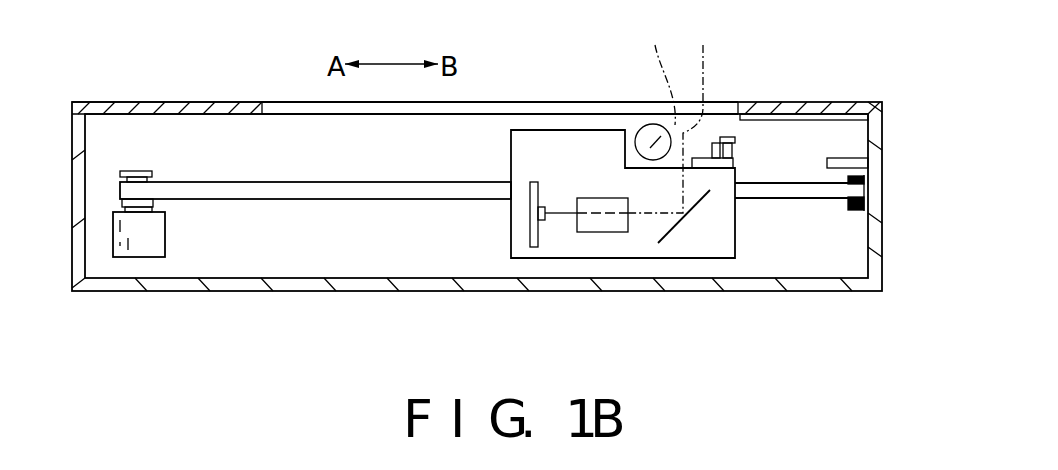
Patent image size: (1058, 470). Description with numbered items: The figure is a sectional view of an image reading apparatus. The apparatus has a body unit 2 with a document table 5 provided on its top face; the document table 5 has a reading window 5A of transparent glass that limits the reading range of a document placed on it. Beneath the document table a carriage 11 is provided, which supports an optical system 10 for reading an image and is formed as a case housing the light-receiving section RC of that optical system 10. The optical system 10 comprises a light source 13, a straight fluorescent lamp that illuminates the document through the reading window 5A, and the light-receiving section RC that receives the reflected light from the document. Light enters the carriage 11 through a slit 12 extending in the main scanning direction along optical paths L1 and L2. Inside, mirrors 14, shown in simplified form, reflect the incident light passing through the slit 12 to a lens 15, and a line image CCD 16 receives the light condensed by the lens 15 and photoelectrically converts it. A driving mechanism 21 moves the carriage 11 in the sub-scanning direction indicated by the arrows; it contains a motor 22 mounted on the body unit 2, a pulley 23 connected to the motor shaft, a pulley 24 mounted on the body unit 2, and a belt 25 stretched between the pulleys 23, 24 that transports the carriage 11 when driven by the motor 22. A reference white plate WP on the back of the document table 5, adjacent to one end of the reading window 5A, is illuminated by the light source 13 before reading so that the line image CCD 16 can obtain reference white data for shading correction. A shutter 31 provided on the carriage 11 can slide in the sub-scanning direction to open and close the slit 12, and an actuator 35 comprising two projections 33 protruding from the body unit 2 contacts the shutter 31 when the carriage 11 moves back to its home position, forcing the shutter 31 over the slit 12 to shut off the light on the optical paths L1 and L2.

The body unit 2 is at (883, 231).
The document table 5 is at (223, 103).
The reading window 5A is at (558, 103).
The optical system 10 is at (497, 212).
The carriage 11 is at (510, 157).
The slit 12 is at (680, 169).
The light source 13 is at (643, 127).
The mirrors 14 is at (688, 214).
The lens 15 is at (603, 198).
The line image CCD 16 is at (540, 208).
The driving mechanism 21 is at (137, 152).
The motor 22 is at (160, 237).
The pulley 23 is at (150, 172).
The pulley 24 is at (872, 177).
The belt 25 is at (292, 188).
The shutter 31 is at (712, 152).
The projections 33 is at (850, 157).
The actuator 35 is at (857, 150).
The reference white plate WP is at (772, 112).
The optical path L1 is at (660, 70).
The optical path L2 is at (675, 114).
The light-receiving section RC is at (642, 236).